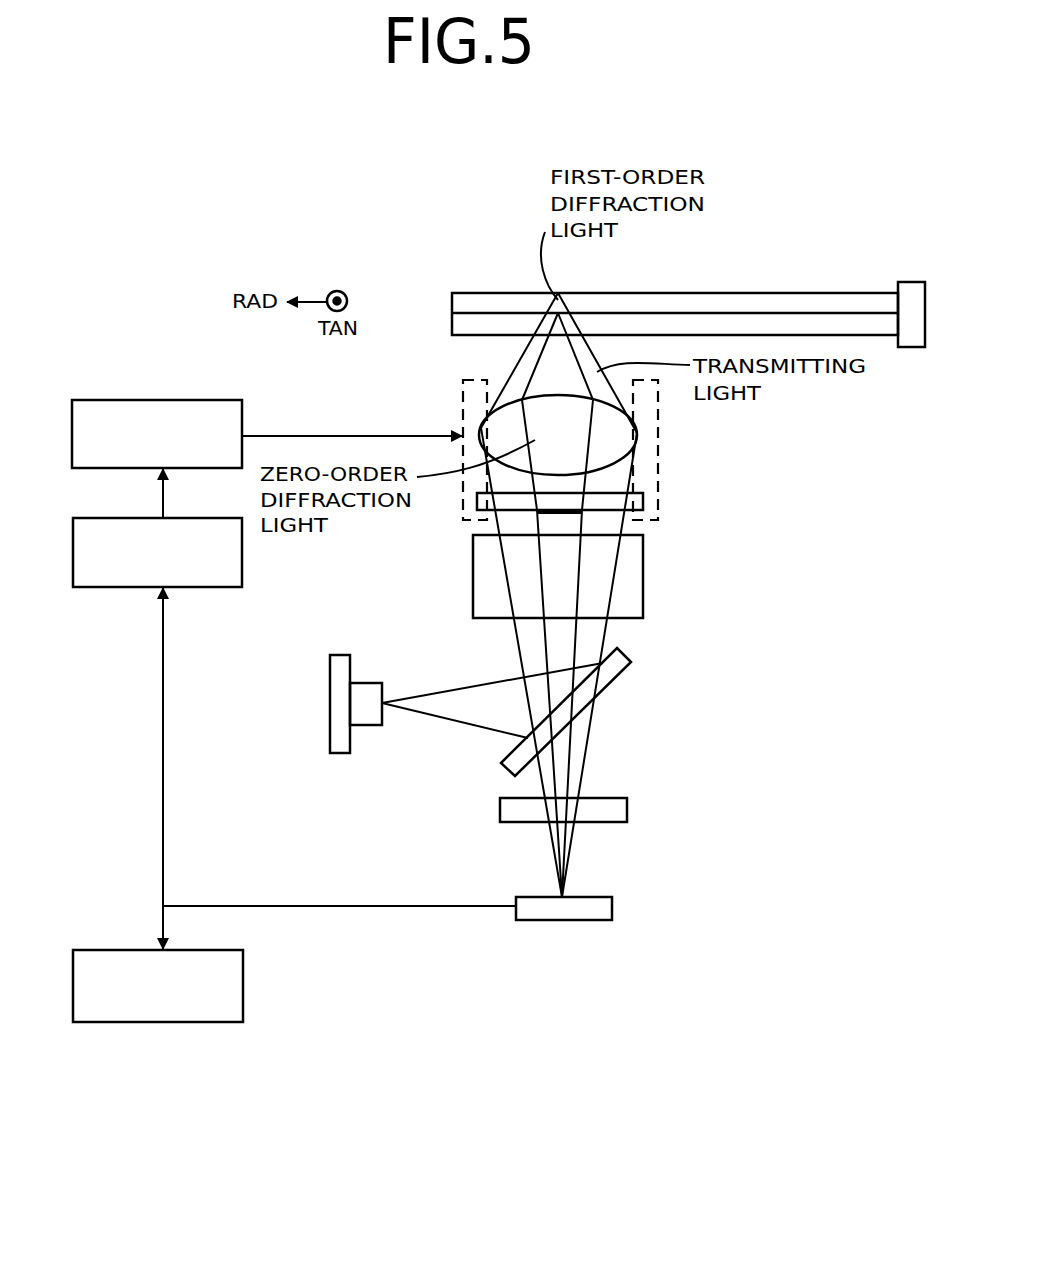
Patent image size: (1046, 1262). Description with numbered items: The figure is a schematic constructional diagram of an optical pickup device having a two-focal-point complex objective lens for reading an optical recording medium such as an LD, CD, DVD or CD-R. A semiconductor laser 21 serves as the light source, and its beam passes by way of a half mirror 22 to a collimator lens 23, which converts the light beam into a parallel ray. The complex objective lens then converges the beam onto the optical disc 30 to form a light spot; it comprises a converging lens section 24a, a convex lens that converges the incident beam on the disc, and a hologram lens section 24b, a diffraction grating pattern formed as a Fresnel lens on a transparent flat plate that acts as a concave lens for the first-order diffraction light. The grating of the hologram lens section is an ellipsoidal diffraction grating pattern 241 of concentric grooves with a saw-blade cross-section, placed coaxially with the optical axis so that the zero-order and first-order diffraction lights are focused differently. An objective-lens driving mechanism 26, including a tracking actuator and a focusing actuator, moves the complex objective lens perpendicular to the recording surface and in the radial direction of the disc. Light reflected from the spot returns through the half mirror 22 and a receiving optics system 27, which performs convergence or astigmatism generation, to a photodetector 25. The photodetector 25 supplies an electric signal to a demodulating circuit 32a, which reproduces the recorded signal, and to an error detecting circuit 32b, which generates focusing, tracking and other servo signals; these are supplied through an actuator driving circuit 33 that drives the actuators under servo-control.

The optical disc 30 is at (851, 292).
The actuator driving circuit 33 is at (172, 400).
The error detecting circuit 32b is at (97, 587).
The demodulating circuit 32a is at (103, 1022).
The semiconductor laser 21 is at (330, 692).
The half mirror 22 is at (631, 662).
The collimator lens 23 is at (643, 590).
The converging lens section 24a is at (637, 435).
The hologram lens section 24b is at (643, 498).
The ellipsoidal diffraction grating pattern 241 is at (557, 514).
The photodetector 25 is at (612, 906).
The objective-lens driving mechanism 26 is at (462, 405).
The receiving optics system 27 is at (627, 808).